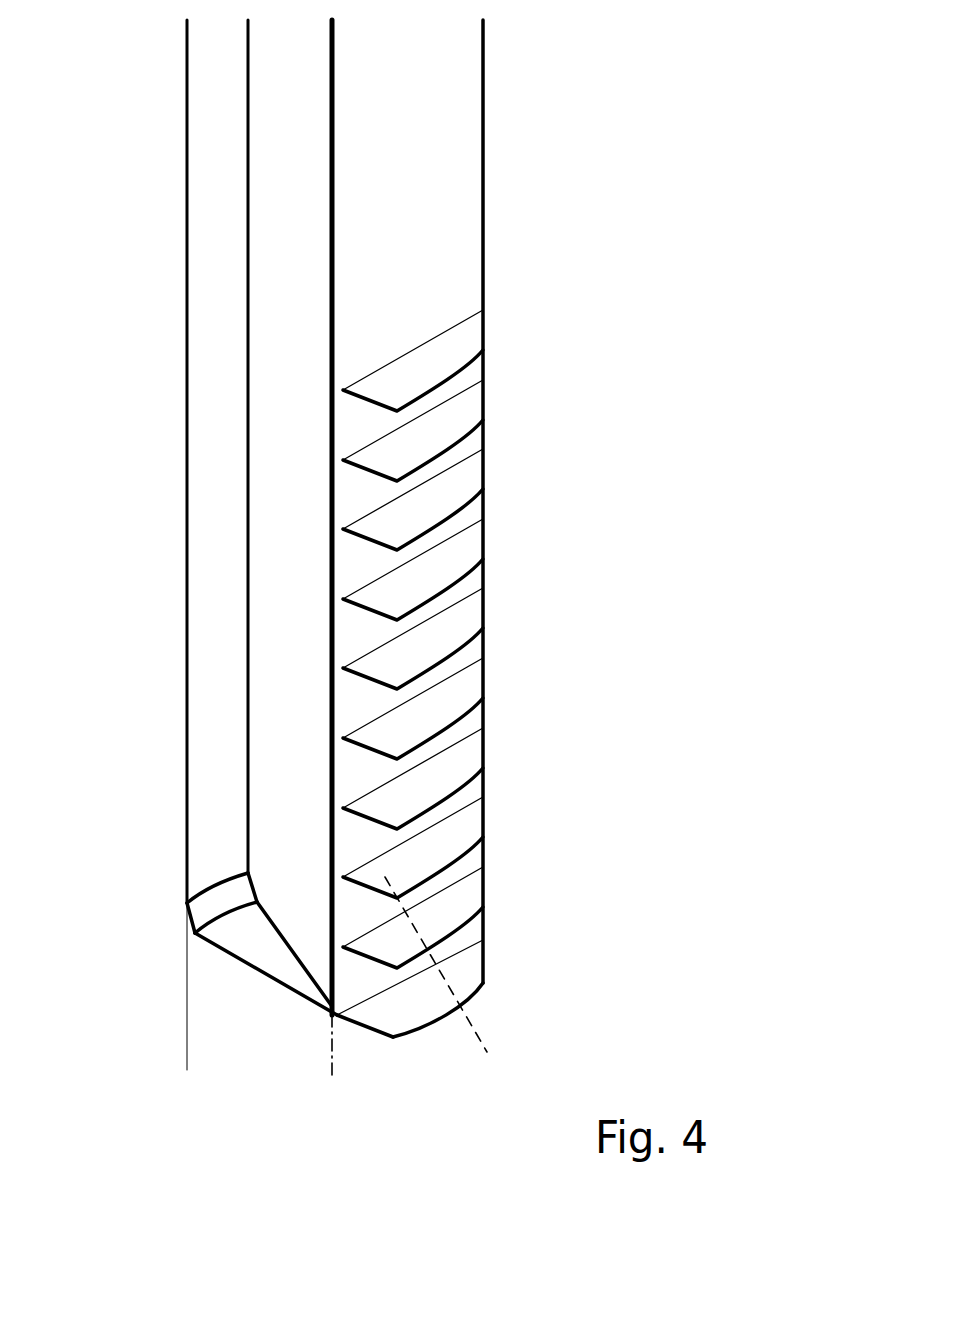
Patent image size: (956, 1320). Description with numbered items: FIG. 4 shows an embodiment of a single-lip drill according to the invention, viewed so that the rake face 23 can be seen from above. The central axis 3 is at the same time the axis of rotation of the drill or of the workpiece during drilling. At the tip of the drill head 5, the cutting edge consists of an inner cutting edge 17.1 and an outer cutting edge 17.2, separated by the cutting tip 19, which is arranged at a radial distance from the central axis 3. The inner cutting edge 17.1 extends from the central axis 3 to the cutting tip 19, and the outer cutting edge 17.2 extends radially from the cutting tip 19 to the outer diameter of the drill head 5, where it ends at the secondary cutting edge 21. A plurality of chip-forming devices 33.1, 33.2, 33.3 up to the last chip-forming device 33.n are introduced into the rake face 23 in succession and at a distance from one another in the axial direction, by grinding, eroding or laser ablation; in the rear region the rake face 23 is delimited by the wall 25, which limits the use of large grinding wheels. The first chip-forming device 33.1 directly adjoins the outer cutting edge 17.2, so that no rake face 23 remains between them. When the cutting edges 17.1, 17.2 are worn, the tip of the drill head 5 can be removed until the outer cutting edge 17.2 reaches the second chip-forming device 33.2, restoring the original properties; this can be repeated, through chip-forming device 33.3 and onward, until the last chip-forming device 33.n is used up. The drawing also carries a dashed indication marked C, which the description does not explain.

The central axis 3 is at (335, 1062).
The drill head 5 is at (152, 393).
The inner cutting edge 17.1 is at (367, 1028).
The outer cutting edge 17.2 is at (468, 995).
The cutting tip 19 is at (397, 1037).
The secondary cutting edge 21 is at (483, 605).
The rake face 23 is at (440, 210).
The wall 25 is at (293, 125).
The chip-forming device 33.1 is at (463, 972).
The second chip-forming device 33.2 is at (463, 898).
The chip-forming device 33.3 is at (465, 825).
The last chip-forming device 33.n is at (470, 335).
The swirl direction C is at (444, 982).